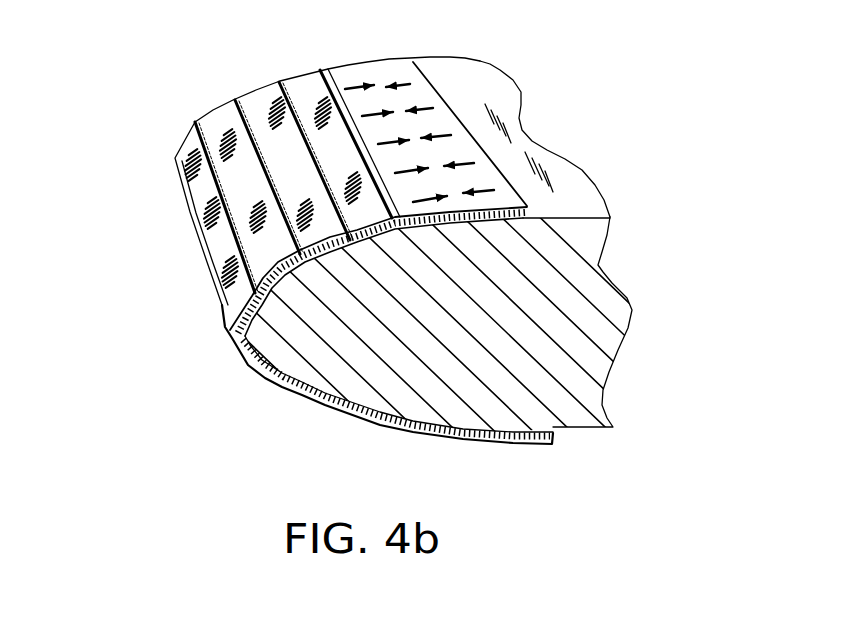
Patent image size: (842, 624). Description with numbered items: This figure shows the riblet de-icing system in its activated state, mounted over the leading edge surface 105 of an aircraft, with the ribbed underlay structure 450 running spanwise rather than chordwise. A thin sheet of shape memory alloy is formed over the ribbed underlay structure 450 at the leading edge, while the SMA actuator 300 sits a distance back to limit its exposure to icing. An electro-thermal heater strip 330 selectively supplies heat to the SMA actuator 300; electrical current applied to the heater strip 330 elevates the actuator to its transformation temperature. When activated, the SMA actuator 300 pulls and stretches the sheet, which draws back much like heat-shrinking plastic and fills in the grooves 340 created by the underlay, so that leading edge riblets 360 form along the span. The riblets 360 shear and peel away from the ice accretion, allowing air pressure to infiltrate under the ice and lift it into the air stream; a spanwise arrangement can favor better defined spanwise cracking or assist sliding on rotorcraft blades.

The leading edge surface 105 is at (633, 317).
The SMA actuator 300 is at (411, 91).
The electro-thermal heater strip 330 is at (528, 216).
The grooves 340 is at (168, 142).
The leading edge riblets 360 is at (233, 99).
The ribbed underlay structure 450 is at (540, 440).